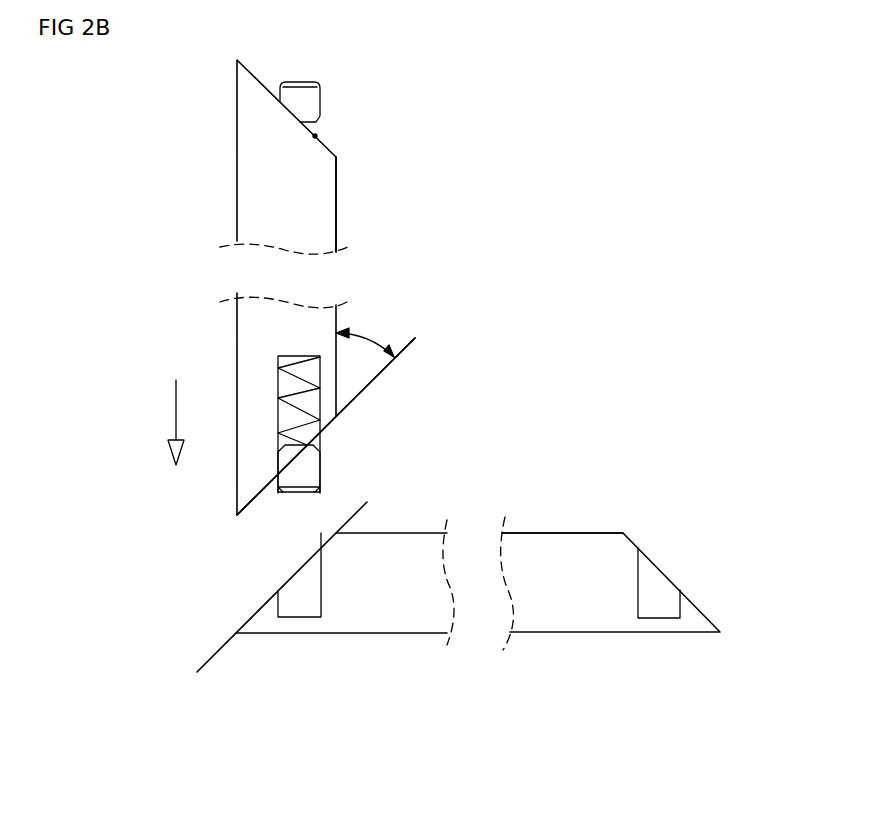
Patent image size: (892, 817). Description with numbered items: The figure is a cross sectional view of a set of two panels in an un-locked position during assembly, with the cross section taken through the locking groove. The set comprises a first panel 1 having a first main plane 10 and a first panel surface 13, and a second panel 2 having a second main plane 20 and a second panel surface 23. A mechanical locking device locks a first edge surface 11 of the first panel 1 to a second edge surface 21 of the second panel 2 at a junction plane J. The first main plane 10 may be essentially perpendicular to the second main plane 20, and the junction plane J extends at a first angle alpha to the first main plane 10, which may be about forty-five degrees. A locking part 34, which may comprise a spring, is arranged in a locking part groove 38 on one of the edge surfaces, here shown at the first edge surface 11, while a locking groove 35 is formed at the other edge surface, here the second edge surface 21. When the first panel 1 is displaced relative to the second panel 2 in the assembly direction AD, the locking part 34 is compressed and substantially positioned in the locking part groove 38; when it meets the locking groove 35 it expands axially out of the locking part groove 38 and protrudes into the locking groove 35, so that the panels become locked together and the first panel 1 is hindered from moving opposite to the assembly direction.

The first panel 1 is at (222, 163).
The first main plane 10 is at (336, 200).
The first panel surface 13 is at (336, 232).
The locking part groove 38 is at (278, 390).
The locking part 34 is at (320, 480).
The first edge surface 11 is at (327, 430).
The second panel 2 is at (578, 650).
The second edge surface 21 is at (255, 614).
The locking groove 35 is at (300, 590).
The second main plane 20 is at (602, 533).
The second panel surface 23 is at (548, 533).